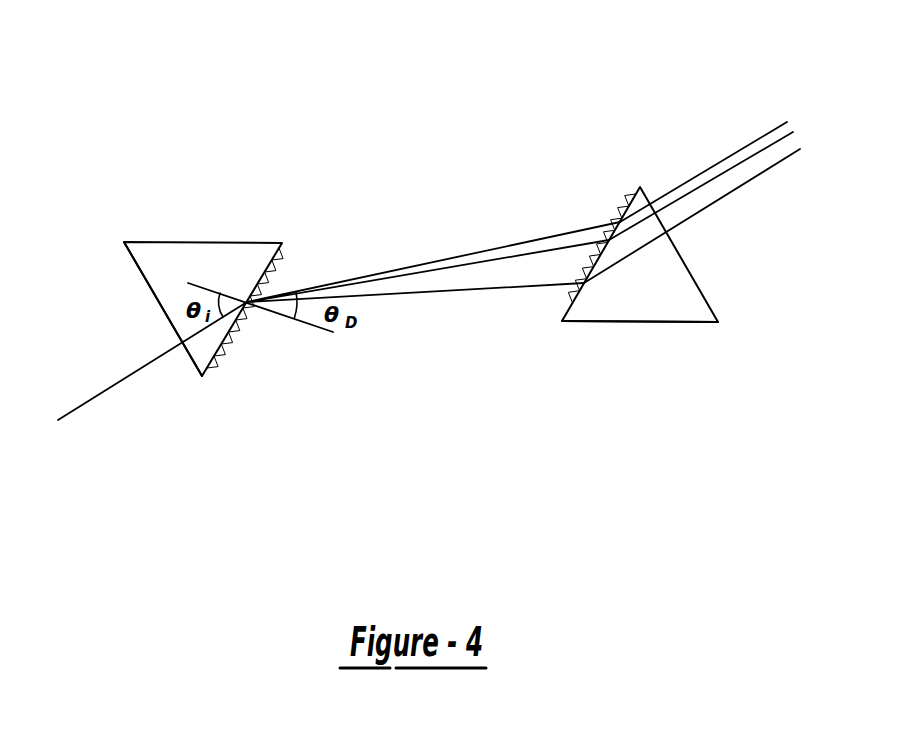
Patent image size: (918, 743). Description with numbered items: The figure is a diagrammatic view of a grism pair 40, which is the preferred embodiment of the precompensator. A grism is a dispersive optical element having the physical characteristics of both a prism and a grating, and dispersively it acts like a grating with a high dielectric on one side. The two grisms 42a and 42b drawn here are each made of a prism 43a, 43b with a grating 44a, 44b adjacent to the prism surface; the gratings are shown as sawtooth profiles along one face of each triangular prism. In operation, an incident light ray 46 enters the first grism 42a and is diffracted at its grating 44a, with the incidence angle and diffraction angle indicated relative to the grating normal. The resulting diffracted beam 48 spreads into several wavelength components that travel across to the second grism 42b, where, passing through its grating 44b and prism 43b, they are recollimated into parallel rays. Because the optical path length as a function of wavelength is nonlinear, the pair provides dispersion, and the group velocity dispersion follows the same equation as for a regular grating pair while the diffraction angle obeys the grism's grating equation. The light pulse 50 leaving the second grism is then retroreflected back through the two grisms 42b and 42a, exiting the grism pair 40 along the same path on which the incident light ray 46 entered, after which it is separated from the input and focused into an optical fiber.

The grism pair 40 is at (424, 169).
The first grism 42a is at (210, 242).
The second grism 42b is at (683, 262).
The prism 43a is at (180, 305).
The prism 43b is at (672, 305).
The grating 44a is at (233, 345).
The grating 44b is at (552, 303).
The incident light ray 46 is at (88, 403).
The diffracted beam 48 is at (403, 295).
The light pulse 50 is at (747, 142).